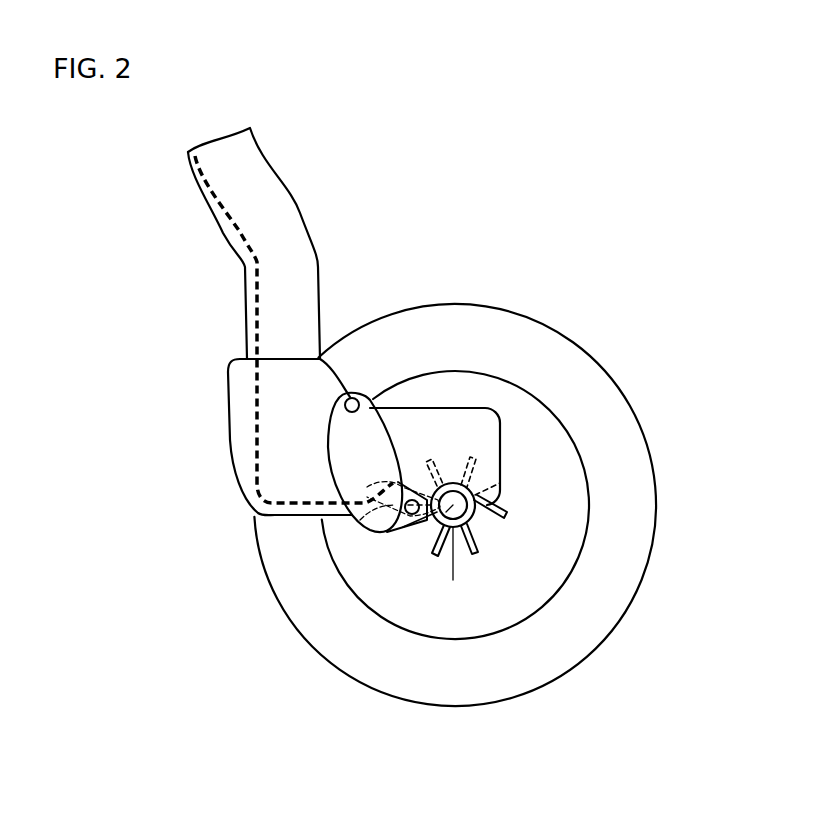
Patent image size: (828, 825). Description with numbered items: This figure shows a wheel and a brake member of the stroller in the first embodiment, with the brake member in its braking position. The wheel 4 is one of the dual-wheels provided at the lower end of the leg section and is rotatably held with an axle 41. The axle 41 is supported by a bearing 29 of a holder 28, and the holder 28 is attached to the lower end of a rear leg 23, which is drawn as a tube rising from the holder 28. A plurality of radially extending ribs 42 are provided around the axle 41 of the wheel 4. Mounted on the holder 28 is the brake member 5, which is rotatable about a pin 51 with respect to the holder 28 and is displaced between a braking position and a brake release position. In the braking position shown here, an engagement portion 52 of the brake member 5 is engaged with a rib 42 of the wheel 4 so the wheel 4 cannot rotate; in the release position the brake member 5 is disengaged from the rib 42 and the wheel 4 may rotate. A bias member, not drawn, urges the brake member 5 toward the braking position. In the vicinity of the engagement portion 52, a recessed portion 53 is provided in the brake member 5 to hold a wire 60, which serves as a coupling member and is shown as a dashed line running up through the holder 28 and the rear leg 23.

The wheel 4 is at (628, 558).
The brake member 5 is at (325, 425).
The rear leg 23 is at (283, 225).
The holder 28 is at (283, 447).
The bearing 29 is at (453, 580).
The axle 41 is at (435, 522).
The rib 42 is at (477, 545).
The pin 51 is at (355, 399).
The engagement portion 52 is at (400, 514).
The recessed portion 53 is at (377, 520).
The wire 60 is at (263, 490).